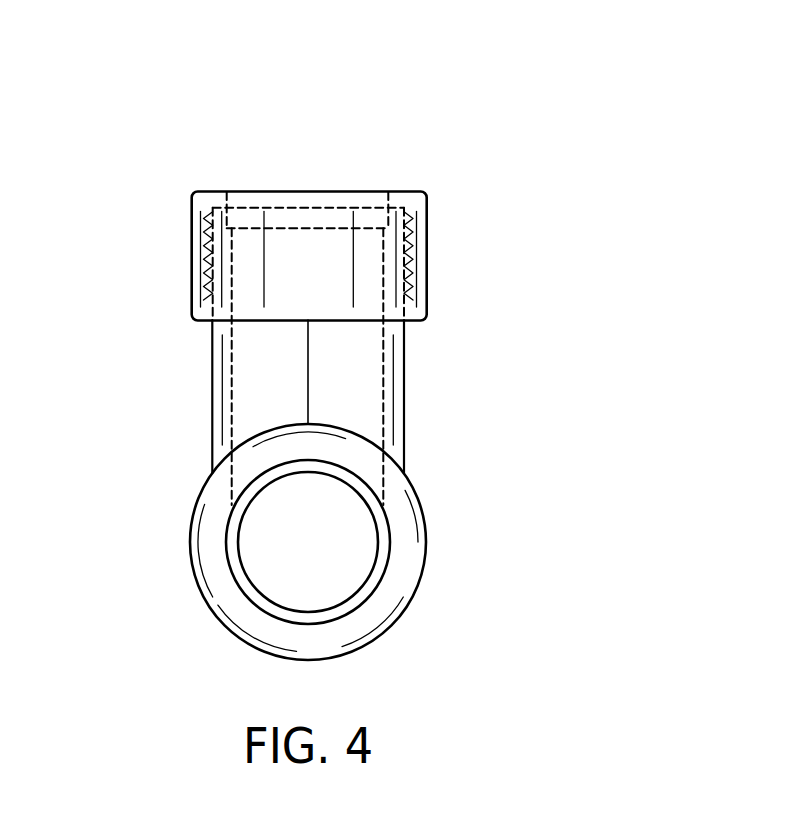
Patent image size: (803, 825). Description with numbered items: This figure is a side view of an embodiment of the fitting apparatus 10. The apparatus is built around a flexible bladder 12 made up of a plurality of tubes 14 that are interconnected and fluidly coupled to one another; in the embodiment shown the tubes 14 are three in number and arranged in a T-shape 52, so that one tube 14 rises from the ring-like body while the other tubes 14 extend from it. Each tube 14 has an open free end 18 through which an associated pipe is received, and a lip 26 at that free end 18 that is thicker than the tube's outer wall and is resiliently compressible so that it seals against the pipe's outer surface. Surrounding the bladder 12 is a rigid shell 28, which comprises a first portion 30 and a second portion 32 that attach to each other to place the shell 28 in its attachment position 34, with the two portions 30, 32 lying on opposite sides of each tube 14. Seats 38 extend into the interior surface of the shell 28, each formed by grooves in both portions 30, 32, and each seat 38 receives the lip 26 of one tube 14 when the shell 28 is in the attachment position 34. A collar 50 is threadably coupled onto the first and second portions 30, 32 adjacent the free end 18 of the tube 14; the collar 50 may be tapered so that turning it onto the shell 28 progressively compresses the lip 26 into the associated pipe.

The fitting apparatus 10 is at (412, 132).
The bladder 12 is at (498, 404).
The tube 14 is at (243, 373).
The free end 18 is at (297, 182).
The lip 26 is at (334, 222).
The shell 28 is at (429, 447).
The first portion 30 is at (257, 397).
The second portion 32 is at (432, 413).
The attachment position 34 is at (428, 478).
The seat 38 is at (228, 228).
The collar 50 is at (410, 202).
The T-shape 52 is at (187, 342).